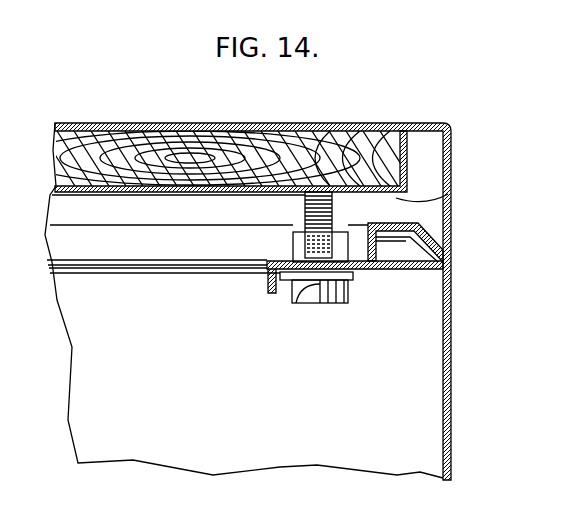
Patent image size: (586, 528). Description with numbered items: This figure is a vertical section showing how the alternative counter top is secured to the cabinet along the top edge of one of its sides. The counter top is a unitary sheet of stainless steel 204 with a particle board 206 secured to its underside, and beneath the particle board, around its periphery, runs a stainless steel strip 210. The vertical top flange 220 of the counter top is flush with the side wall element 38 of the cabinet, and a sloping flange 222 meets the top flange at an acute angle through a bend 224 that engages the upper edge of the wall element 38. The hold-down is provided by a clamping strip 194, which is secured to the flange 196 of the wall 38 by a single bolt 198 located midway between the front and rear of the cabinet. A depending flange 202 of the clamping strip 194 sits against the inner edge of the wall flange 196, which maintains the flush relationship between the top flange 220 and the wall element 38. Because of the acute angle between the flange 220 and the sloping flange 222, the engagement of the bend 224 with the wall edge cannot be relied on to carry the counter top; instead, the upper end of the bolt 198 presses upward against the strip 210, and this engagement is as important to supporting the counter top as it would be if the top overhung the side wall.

The wall 38 is at (452, 383).
The clamping strip 194 is at (392, 218).
The flange 196 is at (357, 300).
The bolt 198 is at (305, 210).
The depending flange 202 is at (267, 294).
The sheet of stainless steel 204 is at (183, 105).
The particle board 206 is at (246, 129).
The stainless steel strip 210 is at (448, 194).
The top flange 220 is at (450, 168).
The sloping flange 222 is at (420, 253).
The bend 224 is at (448, 268).